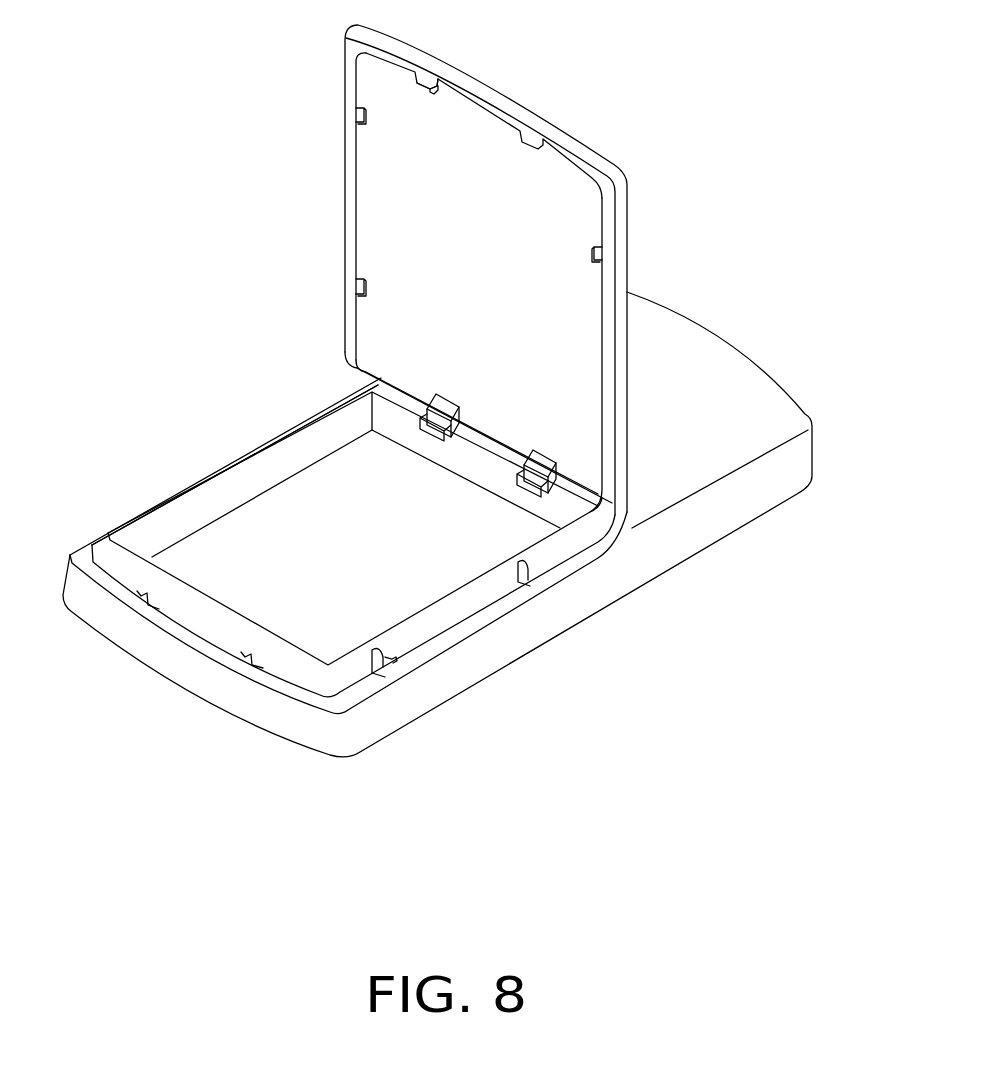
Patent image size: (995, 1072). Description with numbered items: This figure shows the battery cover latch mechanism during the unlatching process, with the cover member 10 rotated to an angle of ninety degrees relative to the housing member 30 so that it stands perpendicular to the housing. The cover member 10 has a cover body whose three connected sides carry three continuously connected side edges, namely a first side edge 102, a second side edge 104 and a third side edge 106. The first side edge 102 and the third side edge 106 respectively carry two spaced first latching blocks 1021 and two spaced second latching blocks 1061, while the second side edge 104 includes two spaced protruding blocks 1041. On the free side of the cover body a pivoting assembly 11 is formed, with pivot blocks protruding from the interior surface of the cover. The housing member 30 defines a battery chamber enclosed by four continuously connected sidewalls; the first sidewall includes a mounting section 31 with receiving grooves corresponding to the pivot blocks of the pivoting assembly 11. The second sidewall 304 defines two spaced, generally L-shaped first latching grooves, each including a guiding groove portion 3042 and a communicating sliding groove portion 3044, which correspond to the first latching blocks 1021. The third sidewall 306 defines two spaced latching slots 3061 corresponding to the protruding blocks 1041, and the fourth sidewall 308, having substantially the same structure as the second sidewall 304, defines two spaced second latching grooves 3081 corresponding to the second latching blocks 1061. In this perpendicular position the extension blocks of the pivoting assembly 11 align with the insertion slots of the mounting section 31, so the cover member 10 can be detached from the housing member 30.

The cover member 10 is at (622, 150).
The first side edge 102 is at (620, 323).
The first latching block 1021 is at (598, 253).
The second side edge 104 is at (493, 90).
The protruding block 1041 is at (427, 82).
The third side edge 106 is at (345, 185).
The second latching block 1061 is at (356, 113).
The pivoting assembly 11 is at (547, 465).
The housing member 30 is at (766, 359).
The second sidewall 304 is at (343, 780).
The guiding groove portion 3042 is at (380, 660).
The sliding groove portion 3044 is at (397, 659).
The third sidewall 306 is at (197, 620).
The latching slot 3061 is at (142, 597).
The fourth sidewall 308 is at (207, 477).
The second latching groove 3081 is at (290, 432).
The mounting section 31 is at (533, 487).